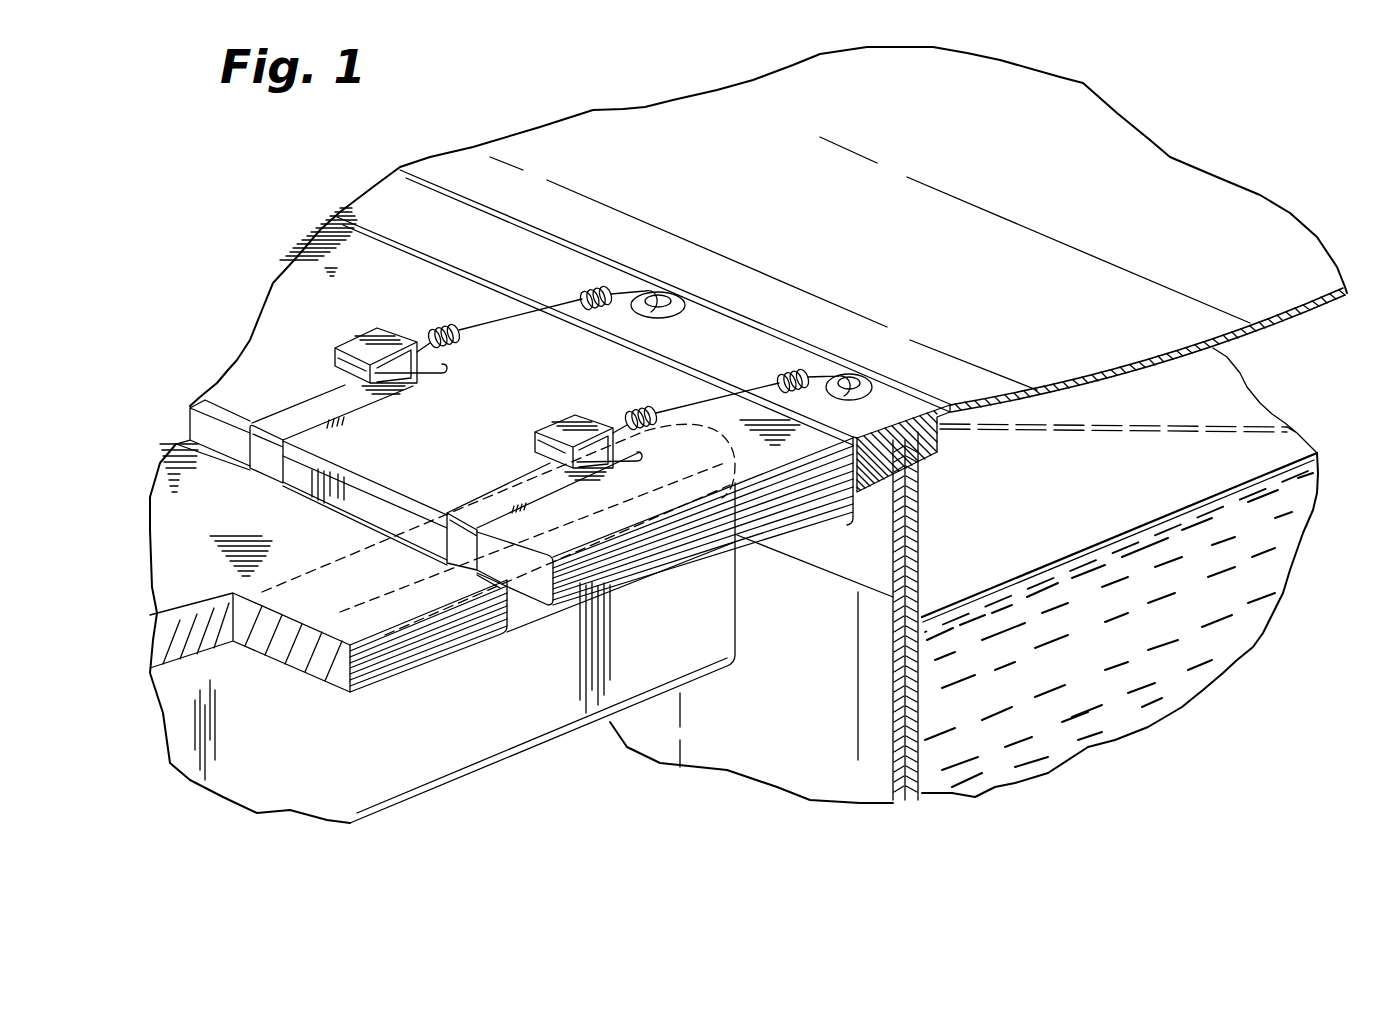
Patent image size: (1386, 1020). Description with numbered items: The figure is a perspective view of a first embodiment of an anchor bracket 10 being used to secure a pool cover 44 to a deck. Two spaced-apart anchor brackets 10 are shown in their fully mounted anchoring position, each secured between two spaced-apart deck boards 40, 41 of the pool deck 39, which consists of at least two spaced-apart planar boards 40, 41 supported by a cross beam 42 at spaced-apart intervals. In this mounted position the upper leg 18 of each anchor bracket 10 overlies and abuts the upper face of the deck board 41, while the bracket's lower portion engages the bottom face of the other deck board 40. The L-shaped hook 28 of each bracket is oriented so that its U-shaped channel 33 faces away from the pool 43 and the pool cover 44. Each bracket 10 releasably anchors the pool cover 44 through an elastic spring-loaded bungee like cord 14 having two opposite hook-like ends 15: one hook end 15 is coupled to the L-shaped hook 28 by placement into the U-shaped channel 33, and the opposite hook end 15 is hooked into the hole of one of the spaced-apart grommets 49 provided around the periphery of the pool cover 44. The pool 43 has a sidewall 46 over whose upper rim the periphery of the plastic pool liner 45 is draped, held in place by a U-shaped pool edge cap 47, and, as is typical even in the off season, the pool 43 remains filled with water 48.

The anchor bracket 10 is at (287, 402).
The elastic spring-loaded bungee like cord 14 is at (512, 290).
The hook-like ends 15 is at (613, 293).
The upper leg 18 is at (335, 407).
The L-shaped hook 28 is at (383, 328).
The U-shaped channel 33 is at (340, 366).
The pool deck 39 is at (290, 266).
The deck board 40 is at (189, 554).
The deck board 41 is at (531, 402).
The cross beam 42 is at (434, 737).
The pool 43 is at (797, 794).
The pool cover 44 is at (889, 224).
The plastic pool liner 45 is at (918, 556).
The sidewall 46 is at (776, 727).
The U-shaped pool edge cap 47 is at (937, 452).
The water 48 is at (1134, 647).
The grommets 49 is at (682, 300).